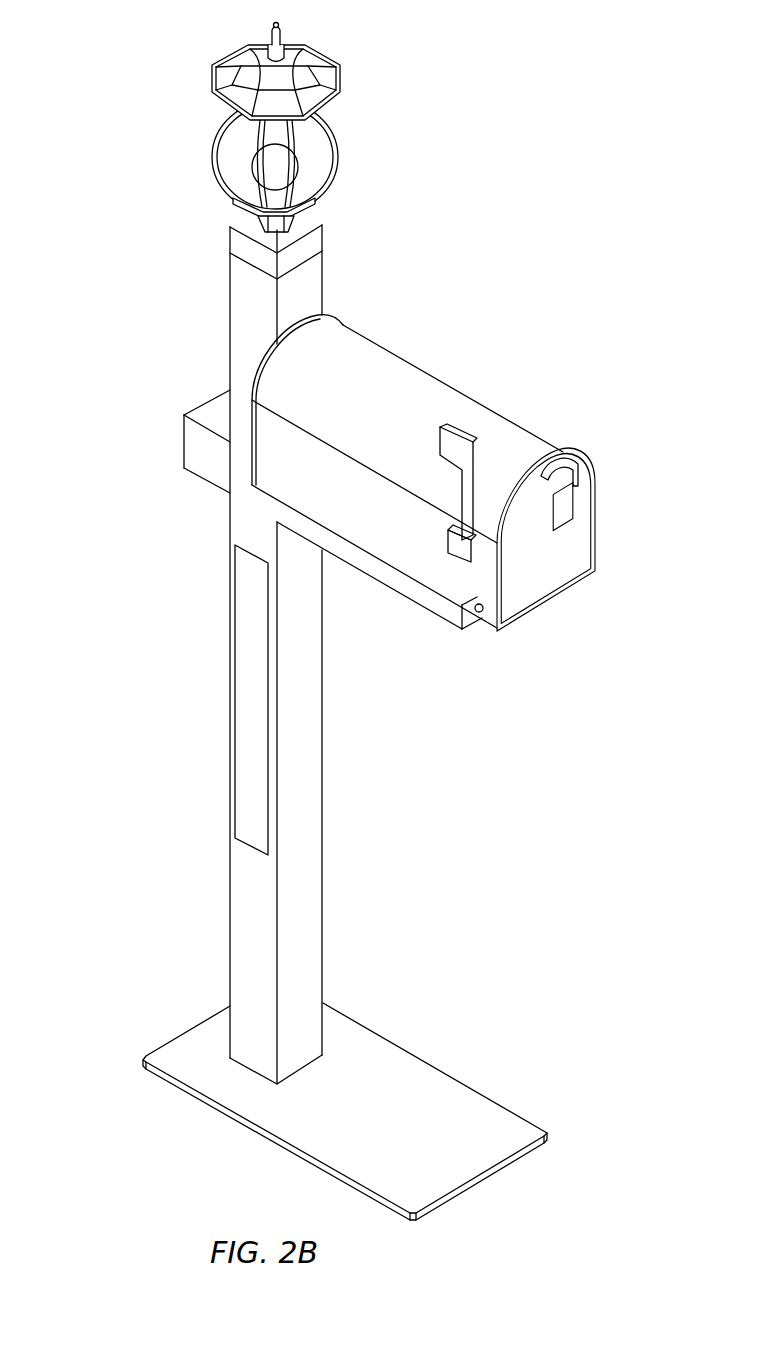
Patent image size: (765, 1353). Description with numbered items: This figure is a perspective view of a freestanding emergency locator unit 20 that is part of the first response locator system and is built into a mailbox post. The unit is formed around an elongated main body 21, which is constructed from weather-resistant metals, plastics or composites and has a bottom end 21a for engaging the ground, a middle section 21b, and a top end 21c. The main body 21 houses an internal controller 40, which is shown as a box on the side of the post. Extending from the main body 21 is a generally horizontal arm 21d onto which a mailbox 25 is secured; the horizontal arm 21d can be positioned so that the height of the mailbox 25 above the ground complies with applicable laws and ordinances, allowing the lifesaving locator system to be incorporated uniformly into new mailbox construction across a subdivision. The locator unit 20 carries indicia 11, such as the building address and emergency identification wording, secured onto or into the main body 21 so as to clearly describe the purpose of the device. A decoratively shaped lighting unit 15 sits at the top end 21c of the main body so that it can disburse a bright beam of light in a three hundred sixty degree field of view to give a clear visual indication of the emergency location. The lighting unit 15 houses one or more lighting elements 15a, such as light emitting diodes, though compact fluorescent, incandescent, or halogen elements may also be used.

The freestanding emergency locator unit 20 is at (114, 92).
The lighting unit 15 is at (413, 37).
The lighting element 15a is at (300, 170).
The main body 21 is at (358, 870).
The bottom end 21a is at (175, 1047).
The middle section 21b is at (320, 785).
The top end 21c is at (249, 284).
The horizontal arm 21d is at (467, 619).
The internal controller 40 is at (204, 451).
The indicia 11 is at (240, 634).
The mailbox 25 is at (598, 532).